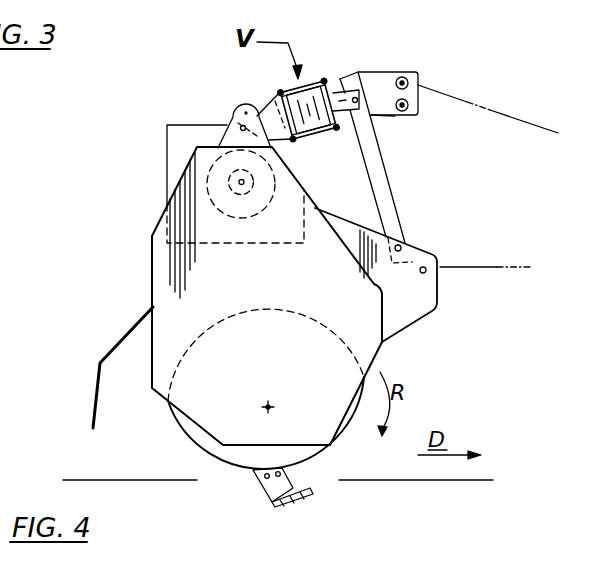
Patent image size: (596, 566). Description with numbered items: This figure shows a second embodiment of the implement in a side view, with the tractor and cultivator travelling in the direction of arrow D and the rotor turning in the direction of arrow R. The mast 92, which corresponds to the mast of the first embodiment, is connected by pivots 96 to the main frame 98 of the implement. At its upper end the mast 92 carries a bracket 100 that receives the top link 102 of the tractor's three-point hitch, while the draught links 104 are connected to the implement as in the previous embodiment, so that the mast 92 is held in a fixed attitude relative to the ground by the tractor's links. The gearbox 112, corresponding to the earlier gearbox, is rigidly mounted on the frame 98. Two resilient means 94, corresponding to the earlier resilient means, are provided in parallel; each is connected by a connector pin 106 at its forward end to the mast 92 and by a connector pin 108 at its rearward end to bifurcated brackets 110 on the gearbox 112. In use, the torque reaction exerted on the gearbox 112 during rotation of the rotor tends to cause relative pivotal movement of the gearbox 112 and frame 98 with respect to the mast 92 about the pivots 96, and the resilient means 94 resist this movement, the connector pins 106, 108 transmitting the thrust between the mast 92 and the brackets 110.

The mast 92 is at (388, 178).
The resilient means 94 is at (318, 142).
The pivots 96 is at (422, 251).
The main frame 98 is at (152, 262).
The bracket 100 is at (402, 72).
The top link 102 is at (502, 107).
The draught links 104 is at (467, 268).
The connector pin 106 is at (374, 117).
The connector pin 108 is at (243, 128).
The bifurcated brackets 110 is at (248, 112).
The gearbox 112 is at (167, 188).